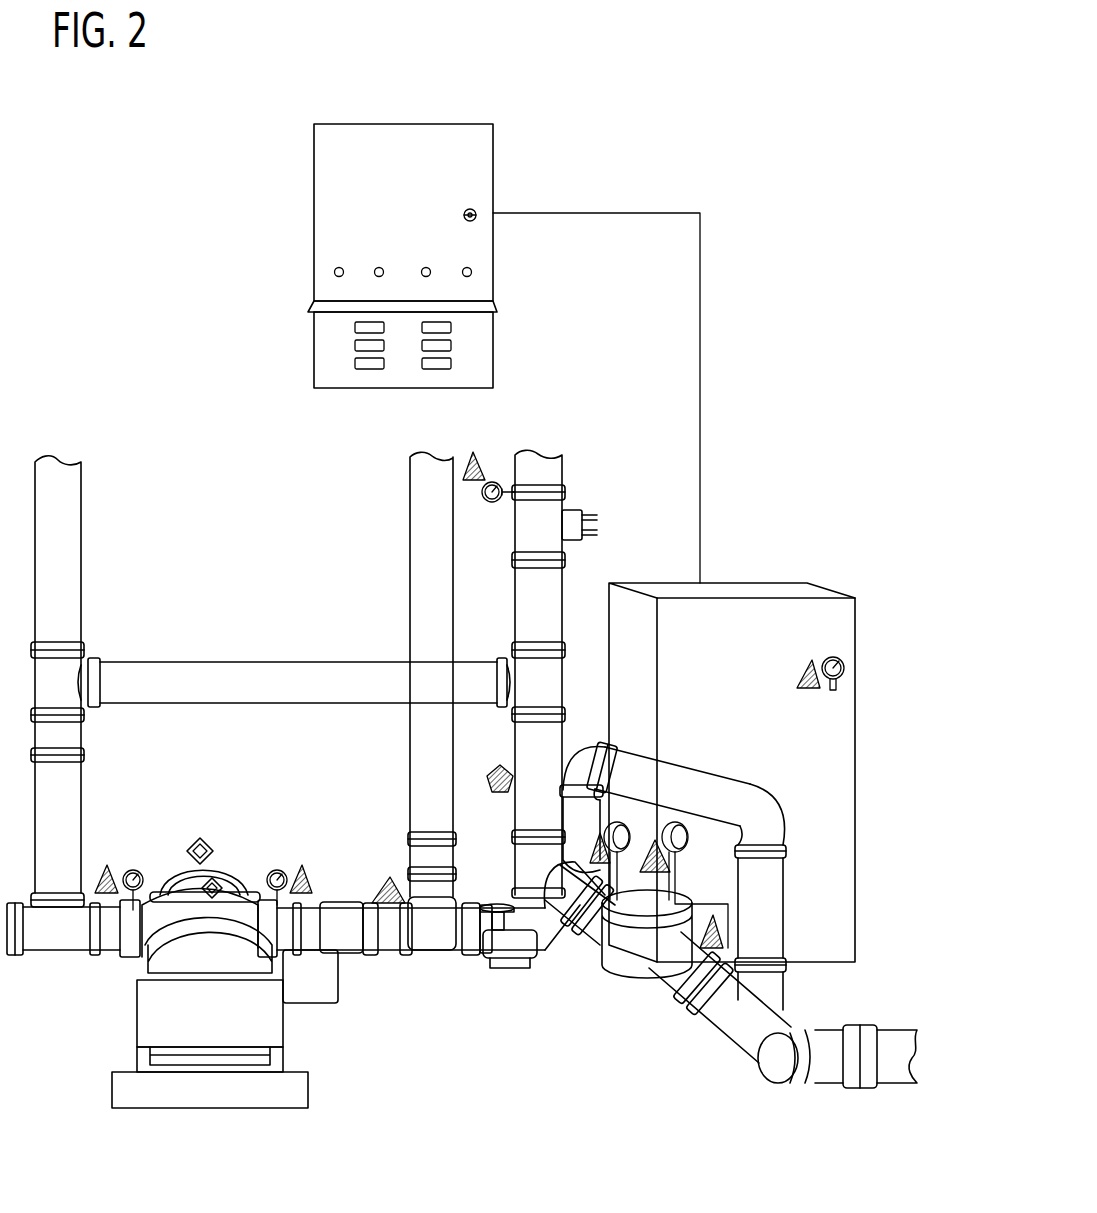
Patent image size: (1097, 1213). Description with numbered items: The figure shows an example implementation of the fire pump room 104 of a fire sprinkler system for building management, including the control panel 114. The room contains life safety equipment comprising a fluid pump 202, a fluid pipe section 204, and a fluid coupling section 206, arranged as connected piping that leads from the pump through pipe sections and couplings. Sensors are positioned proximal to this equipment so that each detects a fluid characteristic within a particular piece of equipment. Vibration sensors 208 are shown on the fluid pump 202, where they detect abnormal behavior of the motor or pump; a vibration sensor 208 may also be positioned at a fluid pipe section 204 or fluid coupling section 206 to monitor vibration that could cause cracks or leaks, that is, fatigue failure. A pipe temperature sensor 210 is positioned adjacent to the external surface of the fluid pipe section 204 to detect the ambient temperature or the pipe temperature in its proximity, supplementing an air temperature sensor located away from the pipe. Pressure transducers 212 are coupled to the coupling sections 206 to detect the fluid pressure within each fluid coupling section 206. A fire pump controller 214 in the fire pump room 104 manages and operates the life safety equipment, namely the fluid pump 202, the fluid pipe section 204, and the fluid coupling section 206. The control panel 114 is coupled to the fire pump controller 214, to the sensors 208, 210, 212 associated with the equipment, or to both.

The fire pump room 104 is at (705, 78).
The control panel 114 is at (313, 212).
The fluid pump 202 is at (160, 1023).
The fluid pipe section 204 is at (525, 753).
The fluid coupling section 206 is at (532, 520).
The vibration sensor 208 is at (217, 878).
The pipe temperature sensor 210 is at (487, 780).
The pressure transducer 212 is at (475, 458).
The fire pump controller 214 is at (777, 618).